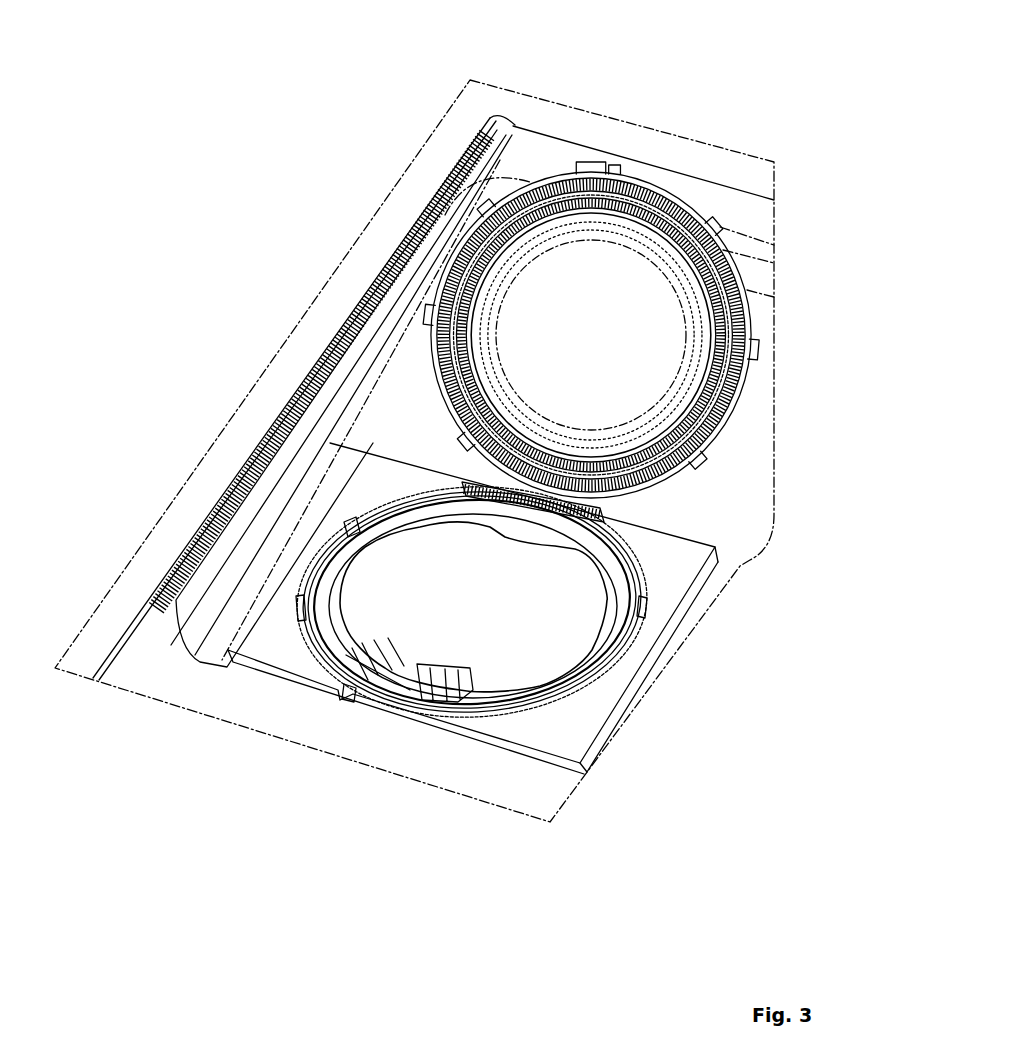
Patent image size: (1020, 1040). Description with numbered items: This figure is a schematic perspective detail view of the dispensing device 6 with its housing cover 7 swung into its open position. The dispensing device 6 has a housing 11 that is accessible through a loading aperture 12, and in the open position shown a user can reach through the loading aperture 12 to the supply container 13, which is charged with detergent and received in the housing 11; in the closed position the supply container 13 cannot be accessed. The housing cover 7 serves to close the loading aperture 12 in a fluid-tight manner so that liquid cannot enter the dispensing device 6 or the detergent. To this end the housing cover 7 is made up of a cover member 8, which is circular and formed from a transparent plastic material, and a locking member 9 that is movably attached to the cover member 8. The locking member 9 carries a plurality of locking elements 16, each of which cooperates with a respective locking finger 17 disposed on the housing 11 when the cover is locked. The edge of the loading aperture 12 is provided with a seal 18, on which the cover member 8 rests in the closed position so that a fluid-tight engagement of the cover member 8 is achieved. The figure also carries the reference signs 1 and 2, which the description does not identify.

The holding device 1 is at (377, 330).
The housing 2 is at (340, 412).
The dispensing device 6 is at (479, 646).
The housing cover 7 is at (590, 295).
The cover member 8 is at (560, 277).
The locking member 9 is at (690, 203).
The housing 11 is at (658, 614).
The loading aperture 12 is at (632, 633).
The supply container 13 is at (515, 625).
The locking elements 16 is at (487, 210).
The locking finger 17 is at (350, 522).
The seal 18 is at (418, 703).